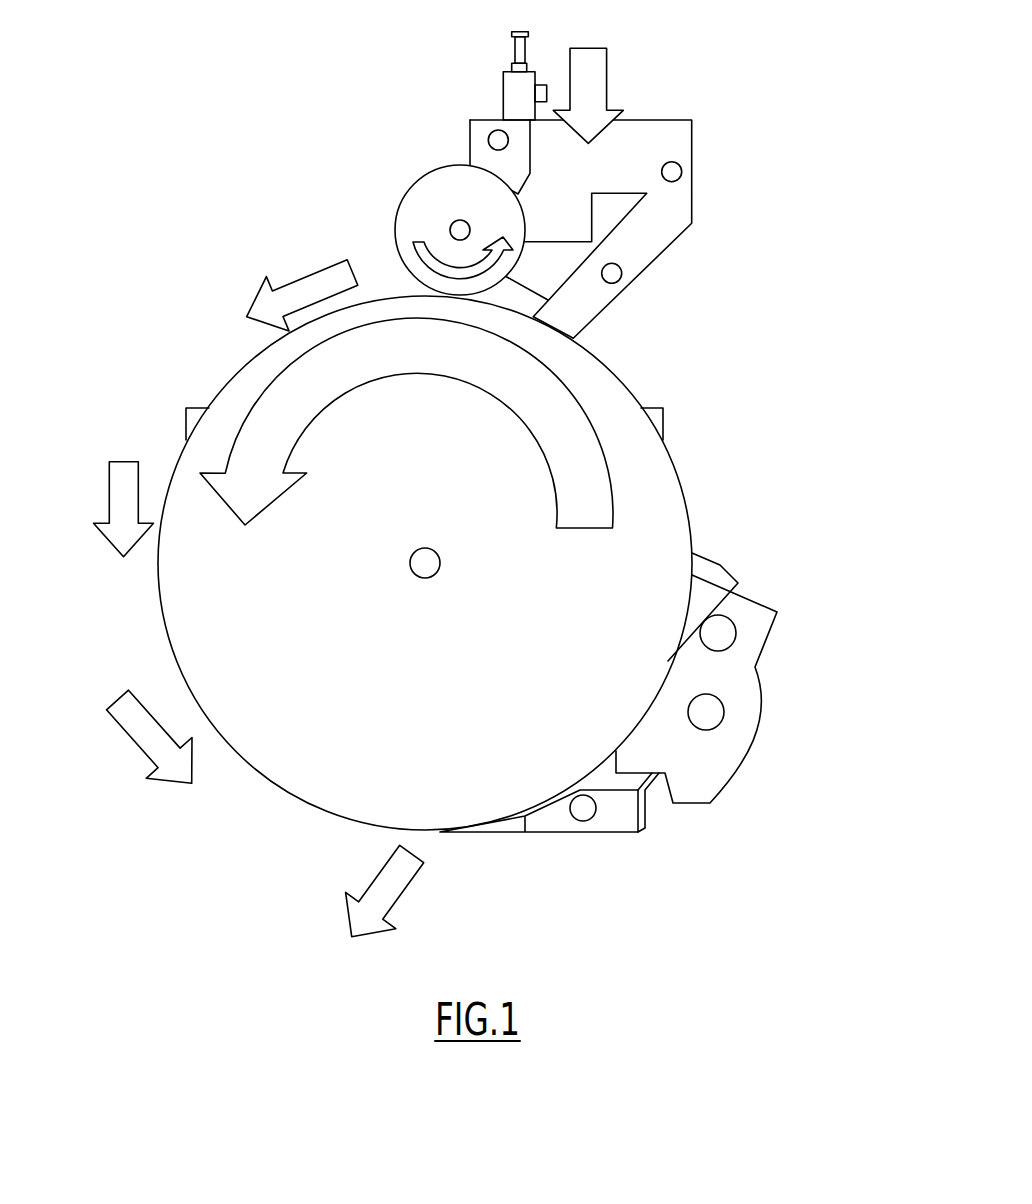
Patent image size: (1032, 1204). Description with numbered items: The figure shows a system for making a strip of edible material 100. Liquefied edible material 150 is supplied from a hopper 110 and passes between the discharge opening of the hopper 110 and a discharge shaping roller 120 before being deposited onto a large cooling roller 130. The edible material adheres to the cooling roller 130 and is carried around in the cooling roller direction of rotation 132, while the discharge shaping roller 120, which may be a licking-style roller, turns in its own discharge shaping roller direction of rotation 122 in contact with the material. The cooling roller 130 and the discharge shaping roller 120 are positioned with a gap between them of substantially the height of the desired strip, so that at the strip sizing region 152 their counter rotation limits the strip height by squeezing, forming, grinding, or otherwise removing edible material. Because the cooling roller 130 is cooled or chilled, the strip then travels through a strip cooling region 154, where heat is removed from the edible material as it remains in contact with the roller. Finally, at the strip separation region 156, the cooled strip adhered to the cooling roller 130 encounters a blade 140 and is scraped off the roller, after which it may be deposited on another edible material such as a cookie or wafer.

The system for making a strip of edible material 100 is at (812, 373).
The hopper 110 is at (628, 130).
The discharge shaping roller 120 is at (415, 185).
The discharge shaping roller direction of rotation 122 is at (403, 245).
The cooling roller 130 is at (225, 390).
The cooling roller direction of rotation 132 is at (562, 435).
The blade 140 is at (507, 832).
The edible material 150 is at (602, 73).
The strip sizing region 152 is at (400, 285).
The strip cooling region 154 is at (108, 495).
The strip separation region 156 is at (378, 885).